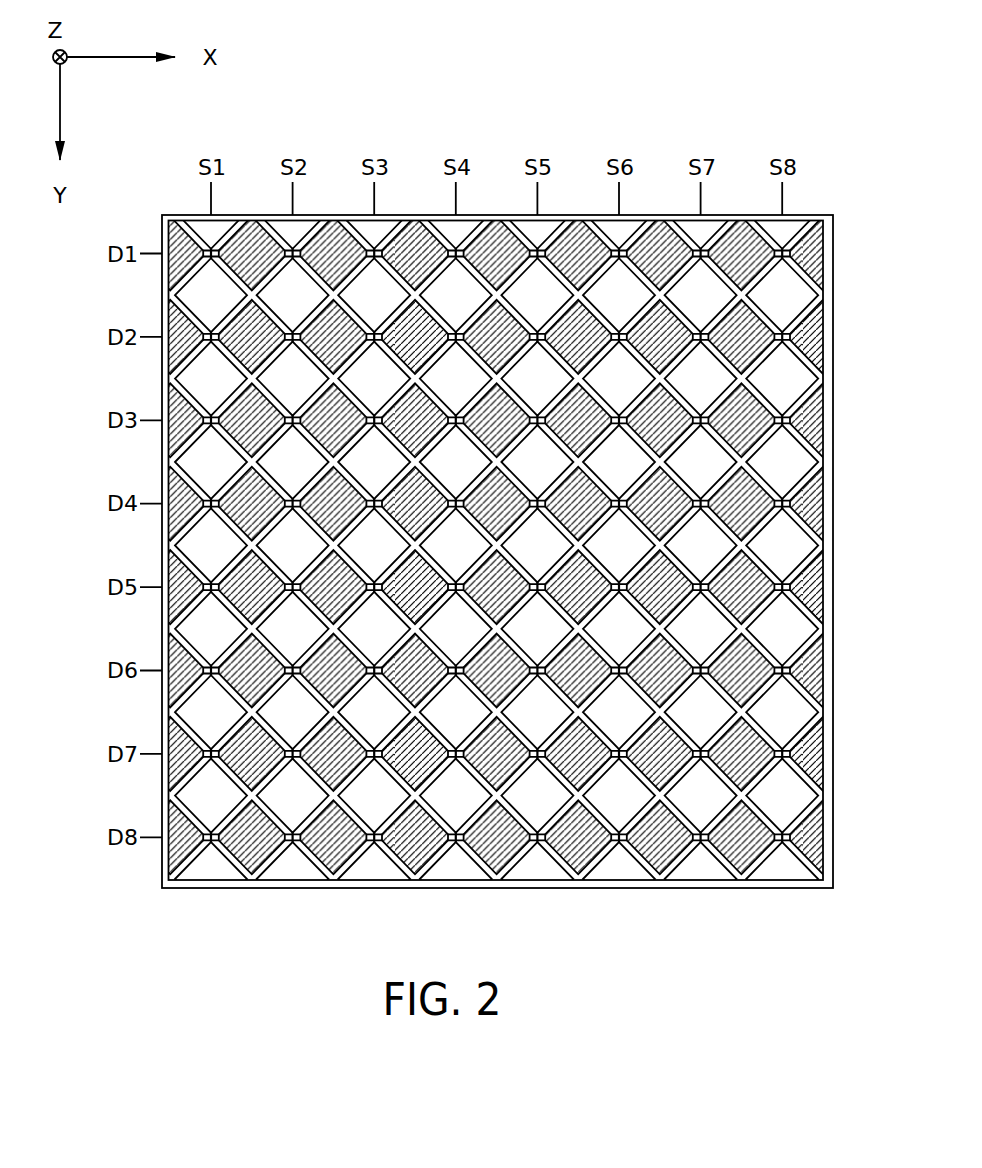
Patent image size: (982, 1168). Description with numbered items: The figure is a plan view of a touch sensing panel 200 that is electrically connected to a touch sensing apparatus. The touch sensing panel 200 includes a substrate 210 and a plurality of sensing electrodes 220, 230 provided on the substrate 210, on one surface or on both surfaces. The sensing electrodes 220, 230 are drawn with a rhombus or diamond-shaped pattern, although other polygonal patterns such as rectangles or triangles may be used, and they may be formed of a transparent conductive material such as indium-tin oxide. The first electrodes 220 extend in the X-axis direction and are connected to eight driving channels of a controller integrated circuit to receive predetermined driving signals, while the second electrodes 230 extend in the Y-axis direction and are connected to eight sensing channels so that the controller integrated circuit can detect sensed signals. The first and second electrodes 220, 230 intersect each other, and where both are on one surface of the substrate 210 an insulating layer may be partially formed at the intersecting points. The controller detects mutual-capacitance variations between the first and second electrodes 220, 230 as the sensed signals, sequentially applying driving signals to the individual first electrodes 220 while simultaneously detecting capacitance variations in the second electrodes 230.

The touch sensing panel 200 is at (607, 108).
The substrate 210 is at (170, 214).
The first electrode 220 is at (170, 272).
The second electrode 230 is at (227, 212).